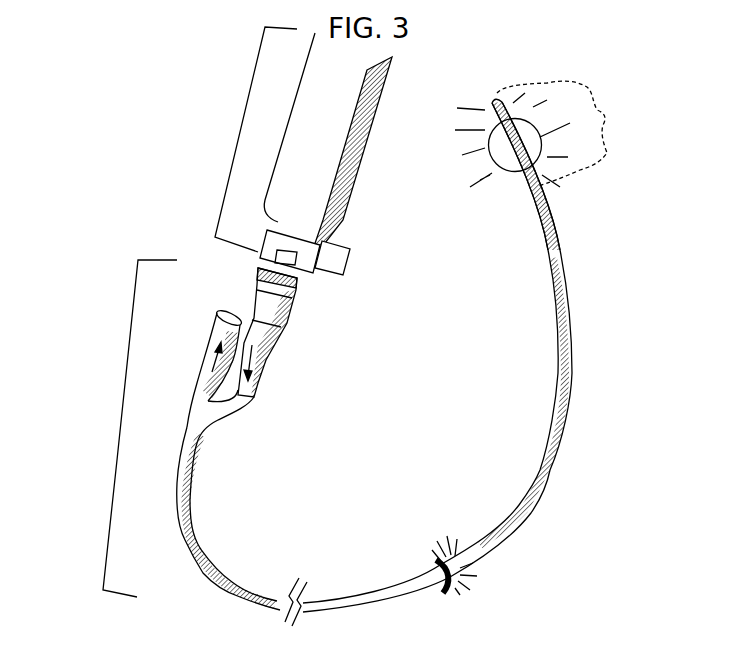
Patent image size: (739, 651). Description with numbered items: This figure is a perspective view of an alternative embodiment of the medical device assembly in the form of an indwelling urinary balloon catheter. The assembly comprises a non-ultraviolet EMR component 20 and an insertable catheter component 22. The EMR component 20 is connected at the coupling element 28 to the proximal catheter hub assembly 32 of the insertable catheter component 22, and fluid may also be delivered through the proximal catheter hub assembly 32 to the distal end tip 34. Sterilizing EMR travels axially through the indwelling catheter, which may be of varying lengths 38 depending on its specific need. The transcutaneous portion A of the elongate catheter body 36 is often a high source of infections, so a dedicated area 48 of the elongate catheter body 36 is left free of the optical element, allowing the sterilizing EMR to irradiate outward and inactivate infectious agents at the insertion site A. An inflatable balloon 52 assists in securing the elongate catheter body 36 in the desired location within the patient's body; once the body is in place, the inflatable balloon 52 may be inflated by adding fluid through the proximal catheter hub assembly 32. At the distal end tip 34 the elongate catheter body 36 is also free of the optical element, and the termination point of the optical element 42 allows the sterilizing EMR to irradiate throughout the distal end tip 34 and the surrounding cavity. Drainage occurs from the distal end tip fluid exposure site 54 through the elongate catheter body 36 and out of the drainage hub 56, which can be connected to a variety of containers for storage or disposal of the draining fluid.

The EMR component 20 is at (237, 153).
The coupling element 28 is at (345, 262).
The proximal catheter hub assembly 32 is at (300, 276).
The drainage hub 56 is at (210, 340).
The insertable catheter component 22 is at (117, 460).
The elongate catheter body 36 is at (183, 503).
The varying lengths 38 is at (291, 592).
The dedicated area 48 is at (462, 557).
The transcutaneous portion A is at (445, 590).
The distal end tip fluid exposure site 54 is at (502, 97).
The inflatable balloon 52 is at (491, 161).
The termination point of the optical element 42 is at (521, 179).
The distal end tip 34 is at (600, 111).